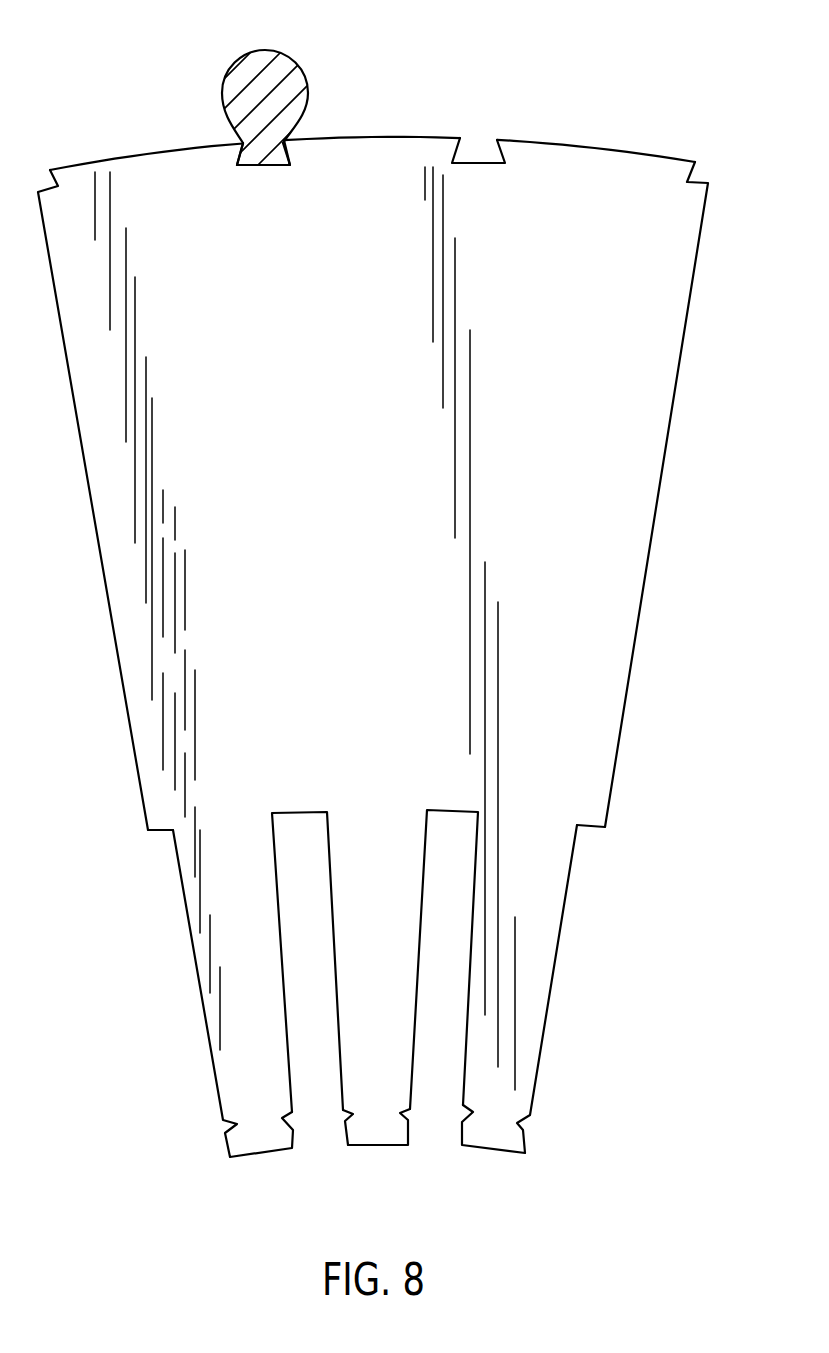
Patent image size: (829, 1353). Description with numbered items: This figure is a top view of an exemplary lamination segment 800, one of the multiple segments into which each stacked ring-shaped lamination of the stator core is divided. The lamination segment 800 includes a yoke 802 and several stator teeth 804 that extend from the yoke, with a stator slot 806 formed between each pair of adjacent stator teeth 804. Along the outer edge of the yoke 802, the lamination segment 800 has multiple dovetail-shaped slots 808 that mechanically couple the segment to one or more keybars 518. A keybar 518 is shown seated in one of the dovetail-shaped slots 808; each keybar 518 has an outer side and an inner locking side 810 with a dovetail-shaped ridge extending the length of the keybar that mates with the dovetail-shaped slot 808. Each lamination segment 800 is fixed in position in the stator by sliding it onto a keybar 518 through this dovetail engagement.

The lamination segment 800 is at (136, 1080).
The yoke 802 is at (634, 486).
The stator teeth 804 is at (545, 908).
The stator slot 806 is at (318, 1090).
The dovetail-shaped slots 808 is at (263, 167).
The locking side 810 is at (277, 152).
The keybar 518 is at (261, 50).